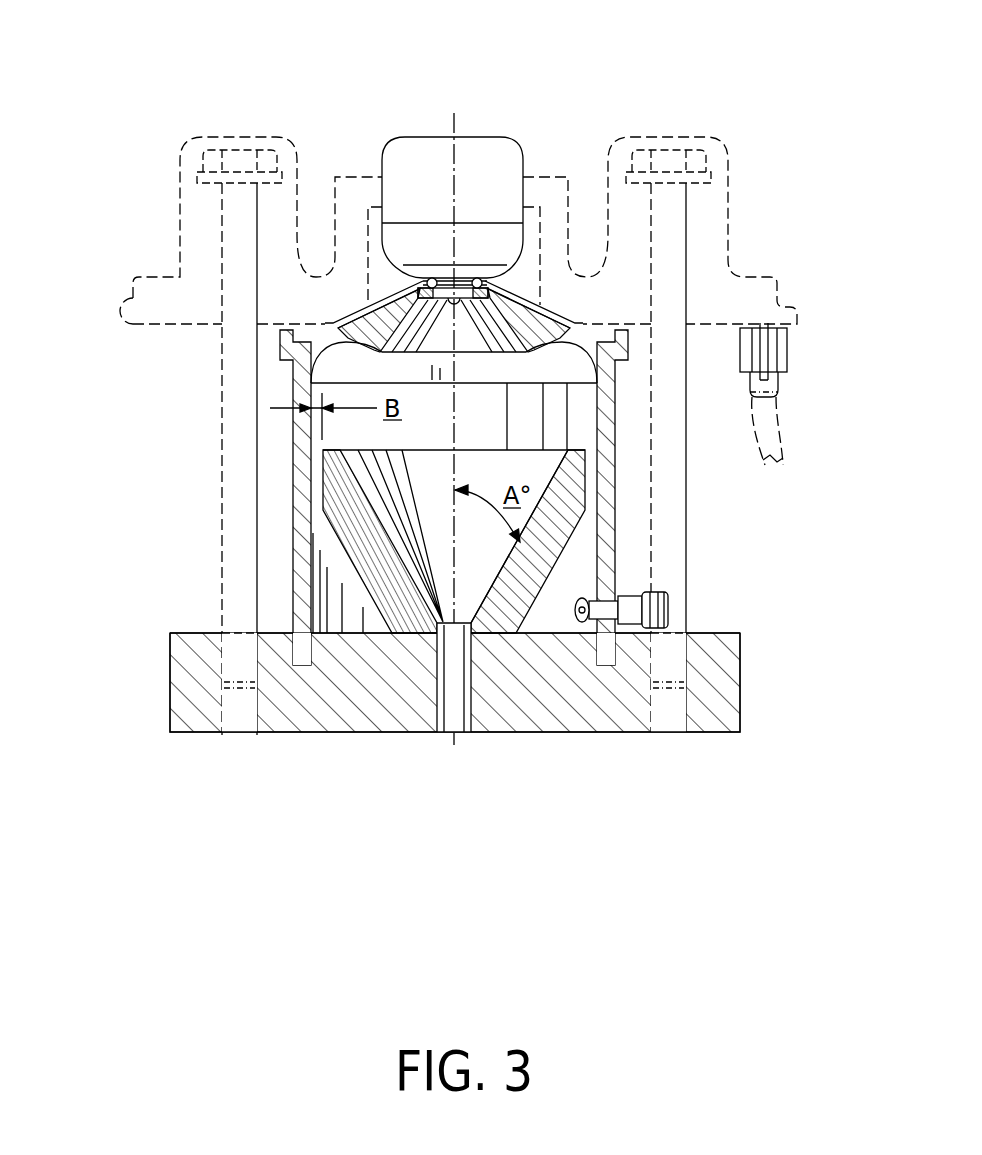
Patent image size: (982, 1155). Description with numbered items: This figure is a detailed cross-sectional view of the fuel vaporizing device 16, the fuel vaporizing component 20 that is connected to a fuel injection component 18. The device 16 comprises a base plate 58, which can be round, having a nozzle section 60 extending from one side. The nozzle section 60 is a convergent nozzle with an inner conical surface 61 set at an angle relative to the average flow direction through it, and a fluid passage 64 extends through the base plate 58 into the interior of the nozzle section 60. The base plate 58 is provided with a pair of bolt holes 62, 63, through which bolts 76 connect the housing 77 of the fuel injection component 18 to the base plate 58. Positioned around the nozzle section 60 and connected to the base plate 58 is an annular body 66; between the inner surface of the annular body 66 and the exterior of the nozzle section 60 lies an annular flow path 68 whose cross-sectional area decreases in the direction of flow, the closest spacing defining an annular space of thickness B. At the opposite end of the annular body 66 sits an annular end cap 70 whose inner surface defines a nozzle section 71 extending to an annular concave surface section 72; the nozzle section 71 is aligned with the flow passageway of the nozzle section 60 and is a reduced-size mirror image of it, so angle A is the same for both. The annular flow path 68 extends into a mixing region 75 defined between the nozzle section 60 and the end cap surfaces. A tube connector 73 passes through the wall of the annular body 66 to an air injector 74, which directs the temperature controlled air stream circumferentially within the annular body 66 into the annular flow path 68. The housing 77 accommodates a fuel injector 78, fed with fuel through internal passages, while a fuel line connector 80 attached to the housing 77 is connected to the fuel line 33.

The fuel vaporizing device 16 is at (205, 100).
The fuel injection component 18 is at (140, 239).
The fuel vaporizing component 20 is at (155, 442).
The fuel line 33 is at (790, 472).
The base plate 58 is at (488, 733).
The nozzle section 60 is at (335, 497).
The inner conical surface 61 is at (513, 555).
The bolt hole 62 is at (237, 692).
The bolt hole 63 is at (688, 690).
The fluid passage 64 is at (448, 735).
The annular body 66 is at (300, 575).
The annular flow path 68 is at (322, 606).
The annular end cap 70 is at (630, 352).
The nozzle section 71 is at (480, 283).
The annular concave surface section 72 is at (562, 323).
The tube connector 73 is at (640, 593).
The air injector 74 is at (512, 563).
The mixing region 75 is at (492, 432).
The bolts 76 is at (230, 447).
The housing 77 is at (703, 253).
The fuel injector 78 is at (545, 106).
The fuel line connector 80 is at (790, 350).